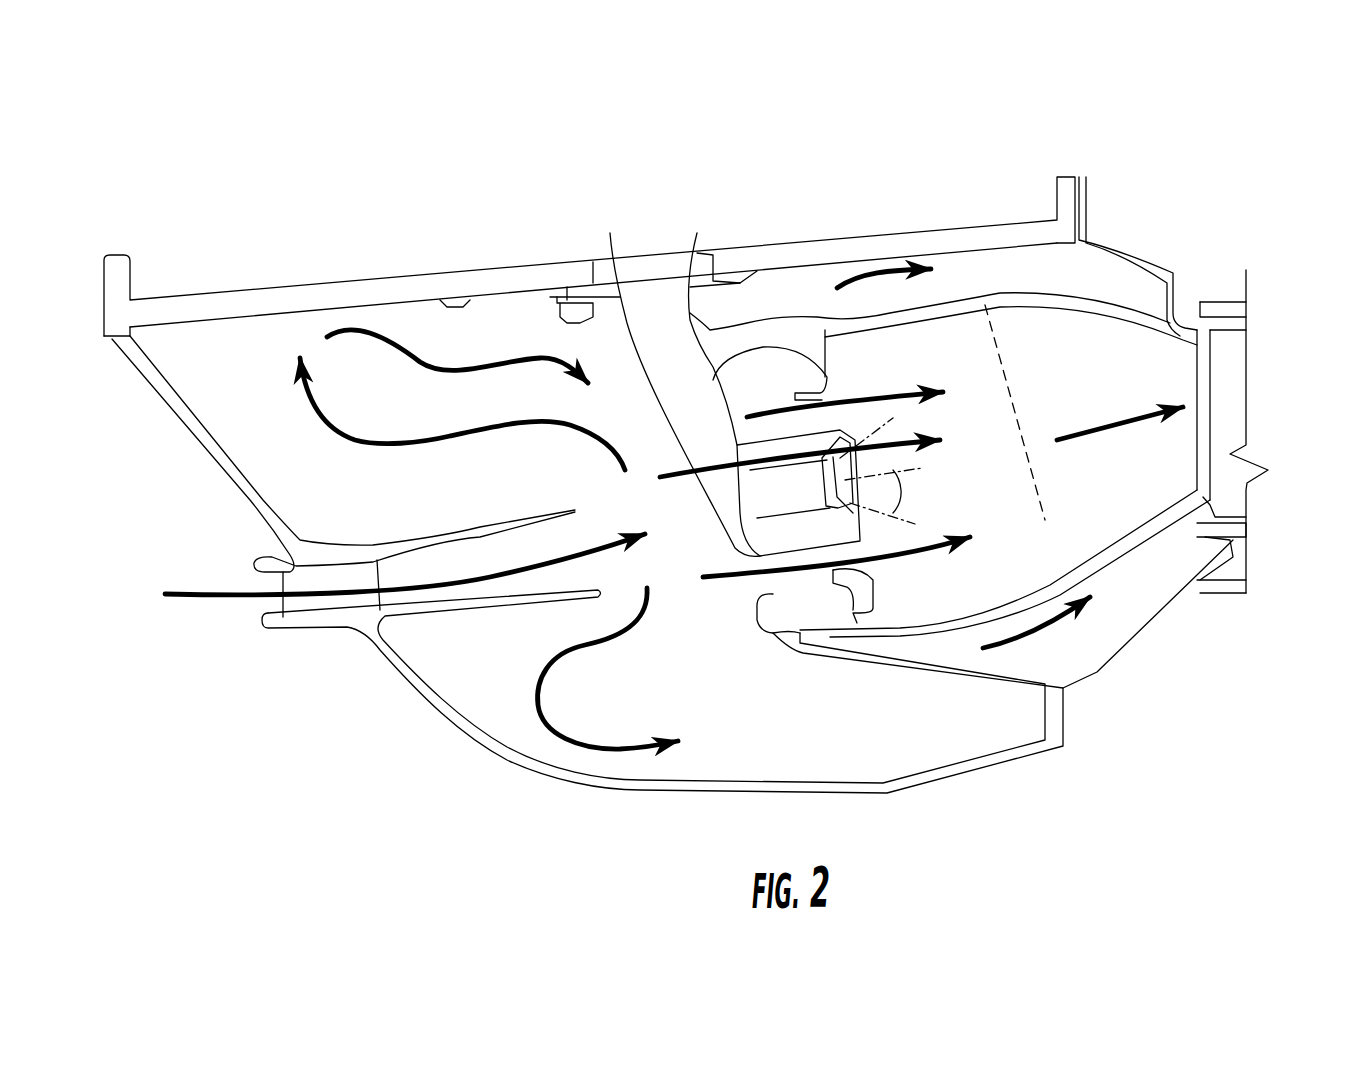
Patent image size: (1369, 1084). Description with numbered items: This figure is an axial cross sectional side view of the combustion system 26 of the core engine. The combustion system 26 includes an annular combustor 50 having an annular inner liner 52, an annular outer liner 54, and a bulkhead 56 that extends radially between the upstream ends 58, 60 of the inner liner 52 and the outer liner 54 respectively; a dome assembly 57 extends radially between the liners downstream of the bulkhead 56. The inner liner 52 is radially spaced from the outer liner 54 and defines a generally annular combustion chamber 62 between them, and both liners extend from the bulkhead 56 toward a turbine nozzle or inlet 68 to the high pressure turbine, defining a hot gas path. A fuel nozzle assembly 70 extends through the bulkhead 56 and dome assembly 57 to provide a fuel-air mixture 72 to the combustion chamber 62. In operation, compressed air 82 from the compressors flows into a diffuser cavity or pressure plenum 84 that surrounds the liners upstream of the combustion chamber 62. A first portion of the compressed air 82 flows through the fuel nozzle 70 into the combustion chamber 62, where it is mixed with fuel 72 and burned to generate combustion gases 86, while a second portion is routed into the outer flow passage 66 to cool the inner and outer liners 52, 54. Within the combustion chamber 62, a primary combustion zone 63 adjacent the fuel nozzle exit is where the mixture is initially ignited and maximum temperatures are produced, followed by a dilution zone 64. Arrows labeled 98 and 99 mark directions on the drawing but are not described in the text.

The combustion system 26 is at (863, 155).
The combustor 50 is at (960, 240).
The annular inner liner 52 is at (1083, 680).
The annular outer liner 54 is at (900, 322).
The bulkhead 56 is at (748, 624).
The dome assembly 57 is at (823, 369).
The upstream end of the inner liner 58 is at (833, 643).
The upstream end of the outer liner 60 is at (775, 310).
The combustion chamber 62 is at (1020, 425).
The primary combustion zone 63 is at (997, 478).
The dilution zone 64 is at (1052, 192).
The outer flow passage 66 is at (1088, 280).
The turbine nozzle or inlet 68 is at (1228, 385).
The fuel nozzle assembly 70 is at (798, 485).
The fuel-air mixture 72 is at (901, 490).
The compressed air 82 is at (423, 583).
The pressure plenum 84 is at (460, 343).
The combustion gases 86 is at (1108, 428).
The aft direction 98 is at (1275, 517).
The forward direction 99 is at (78, 512).